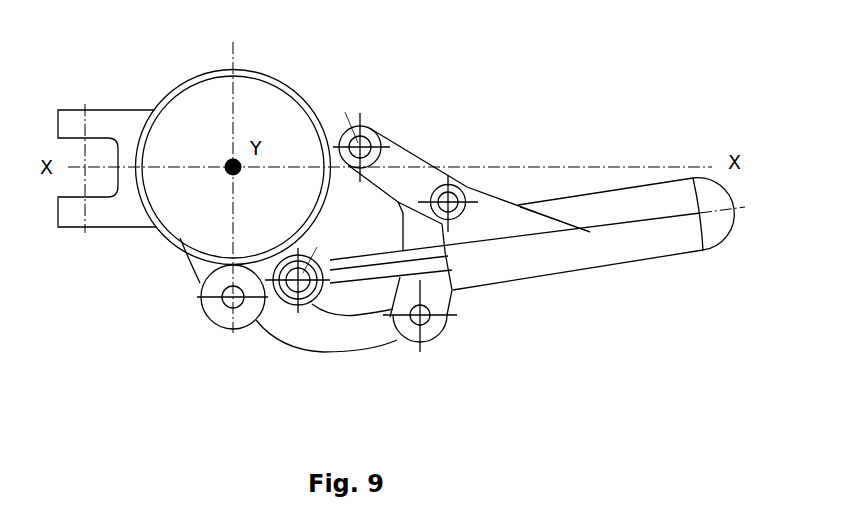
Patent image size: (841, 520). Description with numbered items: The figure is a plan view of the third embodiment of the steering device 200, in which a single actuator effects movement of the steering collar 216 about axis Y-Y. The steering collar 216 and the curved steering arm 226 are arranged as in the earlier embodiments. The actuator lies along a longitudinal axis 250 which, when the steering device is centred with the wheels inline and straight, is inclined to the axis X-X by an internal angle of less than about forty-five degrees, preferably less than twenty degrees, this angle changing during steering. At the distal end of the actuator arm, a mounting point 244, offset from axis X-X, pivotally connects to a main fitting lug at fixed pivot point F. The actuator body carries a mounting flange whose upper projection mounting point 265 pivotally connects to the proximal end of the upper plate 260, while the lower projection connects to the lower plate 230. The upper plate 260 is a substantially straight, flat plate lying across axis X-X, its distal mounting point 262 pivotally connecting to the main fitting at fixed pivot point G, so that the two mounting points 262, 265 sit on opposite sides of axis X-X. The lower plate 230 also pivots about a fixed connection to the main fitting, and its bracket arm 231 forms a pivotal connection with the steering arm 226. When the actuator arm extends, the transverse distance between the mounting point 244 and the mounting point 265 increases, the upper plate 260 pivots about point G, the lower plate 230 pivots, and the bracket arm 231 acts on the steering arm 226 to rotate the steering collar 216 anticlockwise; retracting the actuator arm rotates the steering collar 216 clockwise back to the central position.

The steering device 200 is at (583, 141).
The steering collar 216 is at (173, 92).
The steering arm 226 is at (357, 340).
The lower plate 230 is at (400, 228).
The bracket arm 231 is at (457, 302).
The mounting point 244 is at (277, 302).
The longitudinal axis 250 is at (637, 228).
The upper plate 260 is at (413, 167).
The mounting point 262 is at (363, 143).
The mounting point 265 is at (452, 190).